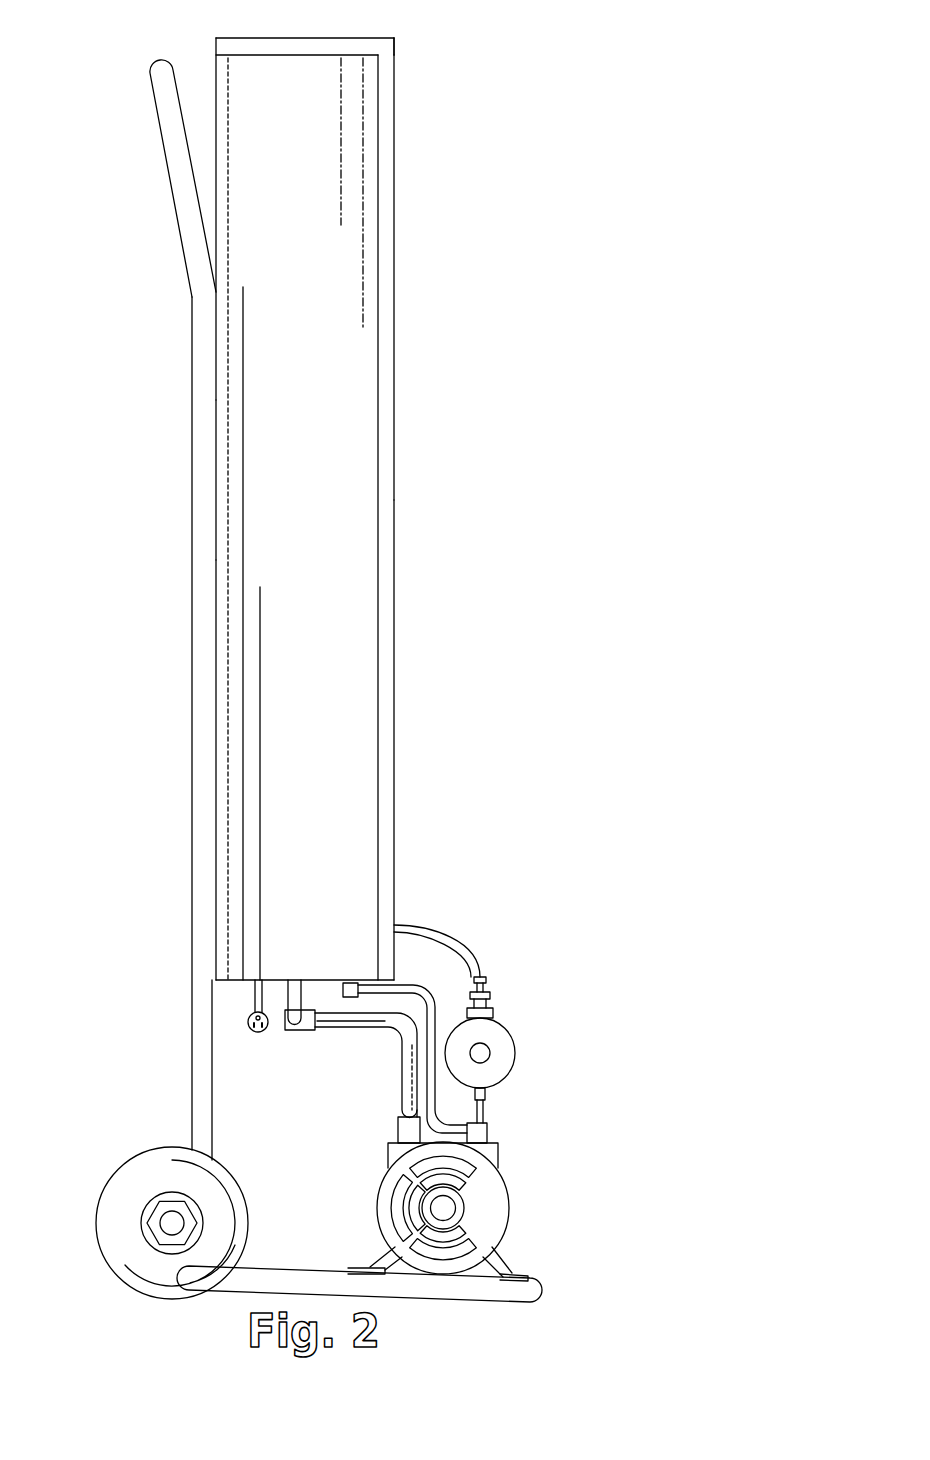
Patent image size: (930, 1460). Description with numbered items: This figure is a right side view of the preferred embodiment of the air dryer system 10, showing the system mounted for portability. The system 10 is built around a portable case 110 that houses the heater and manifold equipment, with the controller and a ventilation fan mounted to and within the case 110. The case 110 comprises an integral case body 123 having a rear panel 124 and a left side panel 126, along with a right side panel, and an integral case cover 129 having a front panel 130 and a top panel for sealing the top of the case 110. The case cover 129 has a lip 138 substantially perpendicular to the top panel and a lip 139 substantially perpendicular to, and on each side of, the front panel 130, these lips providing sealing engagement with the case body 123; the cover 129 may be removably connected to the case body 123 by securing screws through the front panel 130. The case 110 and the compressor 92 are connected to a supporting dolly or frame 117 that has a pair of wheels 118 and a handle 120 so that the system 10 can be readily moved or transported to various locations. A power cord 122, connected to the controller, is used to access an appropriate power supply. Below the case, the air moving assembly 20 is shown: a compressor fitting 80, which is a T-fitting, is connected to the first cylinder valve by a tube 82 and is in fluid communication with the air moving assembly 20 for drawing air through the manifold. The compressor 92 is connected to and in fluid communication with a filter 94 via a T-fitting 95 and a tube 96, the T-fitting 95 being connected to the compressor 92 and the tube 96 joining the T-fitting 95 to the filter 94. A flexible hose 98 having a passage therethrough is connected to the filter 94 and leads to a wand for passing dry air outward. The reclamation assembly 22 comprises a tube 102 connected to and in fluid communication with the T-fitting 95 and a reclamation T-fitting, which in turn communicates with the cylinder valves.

The air dryer system 10 is at (434, 200).
The air moving assembly 20 is at (556, 1158).
The reclamation assembly 22 is at (412, 938).
The compressor fitting 80 is at (295, 1027).
The tube 82 is at (360, 1030).
The compressor 92 is at (497, 1228).
The filter 94 is at (497, 1033).
The T-fitting 95 is at (487, 1133).
The tube 96 is at (482, 1115).
The flexible hose 98 is at (463, 938).
The tube 102 is at (402, 985).
The portable case 110 is at (367, 373).
The supporting dolly or frame 117 is at (193, 1072).
The wheels 118 is at (115, 1185).
The handle 120 is at (173, 165).
The power cord 122 is at (255, 998).
The integral case body 123 is at (199, 478).
The rear panel 124 is at (215, 108).
The left side panel 126 is at (336, 523).
The integral case cover 129 is at (428, 440).
The front panel 130 is at (393, 575).
The lip 138 is at (285, 44).
The lip 139 is at (387, 135).